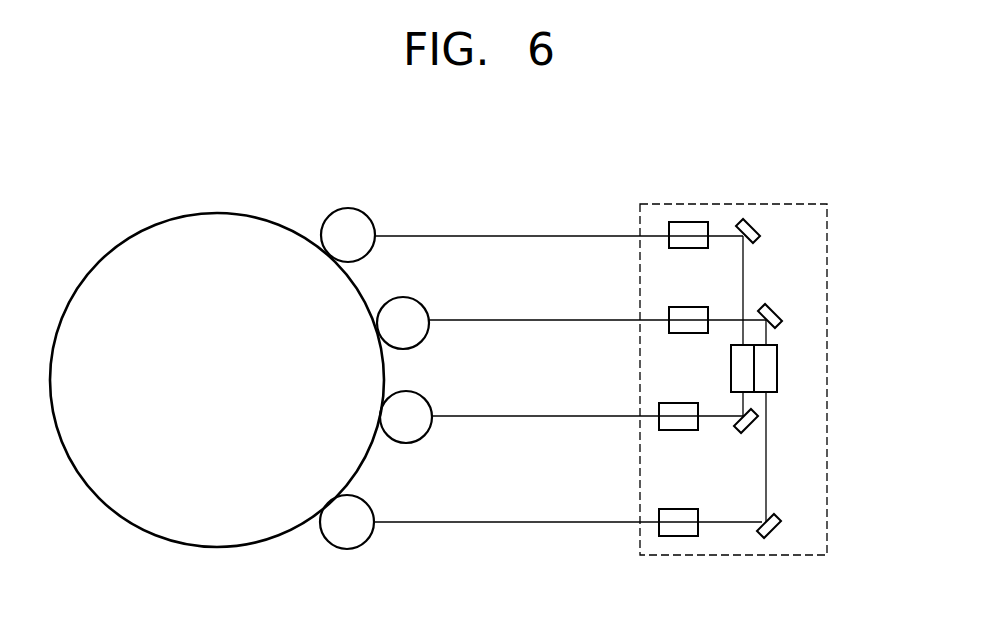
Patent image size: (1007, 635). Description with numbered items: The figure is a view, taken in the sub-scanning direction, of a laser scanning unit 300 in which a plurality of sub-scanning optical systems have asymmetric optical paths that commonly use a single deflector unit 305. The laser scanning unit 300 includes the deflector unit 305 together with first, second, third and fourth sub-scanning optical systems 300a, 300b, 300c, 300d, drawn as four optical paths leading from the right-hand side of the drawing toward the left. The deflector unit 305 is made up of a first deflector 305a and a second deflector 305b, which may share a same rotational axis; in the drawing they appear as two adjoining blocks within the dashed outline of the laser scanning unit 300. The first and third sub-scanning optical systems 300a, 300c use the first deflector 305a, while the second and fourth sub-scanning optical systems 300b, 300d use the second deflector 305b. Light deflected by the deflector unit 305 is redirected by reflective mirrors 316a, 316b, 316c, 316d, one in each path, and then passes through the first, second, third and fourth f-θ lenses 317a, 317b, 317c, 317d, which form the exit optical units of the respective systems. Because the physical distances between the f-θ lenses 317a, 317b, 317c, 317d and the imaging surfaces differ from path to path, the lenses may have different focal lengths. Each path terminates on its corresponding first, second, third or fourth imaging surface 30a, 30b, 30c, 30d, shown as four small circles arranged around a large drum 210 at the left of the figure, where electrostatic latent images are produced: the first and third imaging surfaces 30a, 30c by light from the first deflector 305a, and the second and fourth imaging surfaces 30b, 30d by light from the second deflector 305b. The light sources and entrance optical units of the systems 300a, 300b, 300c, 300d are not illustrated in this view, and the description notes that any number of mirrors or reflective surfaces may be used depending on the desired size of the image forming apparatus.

The photosensitive drum / developing unit 210 is at (214, 216).
The first imaging surface 30a is at (347, 215).
The second imaging surface 30b is at (404, 305).
The third imaging surface 30c is at (418, 402).
The fourth imaging surface 30d is at (363, 518).
The laser scanning unit 300 is at (658, 203).
The first sub-scanning optical system 300a is at (719, 221).
The second sub-scanning optical system 300b is at (727, 307).
The third sub-scanning optical system 300c is at (712, 431).
The fourth sub-scanning optical system 300d is at (727, 535).
The deflector unit 305 is at (845, 370).
The first deflector 305a is at (751, 343).
The second deflector 305b is at (772, 394).
The reflective mirror 316a is at (752, 220).
The reflective mirror 316b is at (772, 306).
The reflective mirror 316c is at (757, 430).
The reflective mirror 316d is at (772, 537).
The first f-θ lens 317a is at (668, 225).
The second f-θ lens 317b is at (670, 308).
The third f-θ lens 317c is at (660, 407).
The fourth f-θ lens 317d is at (660, 510).